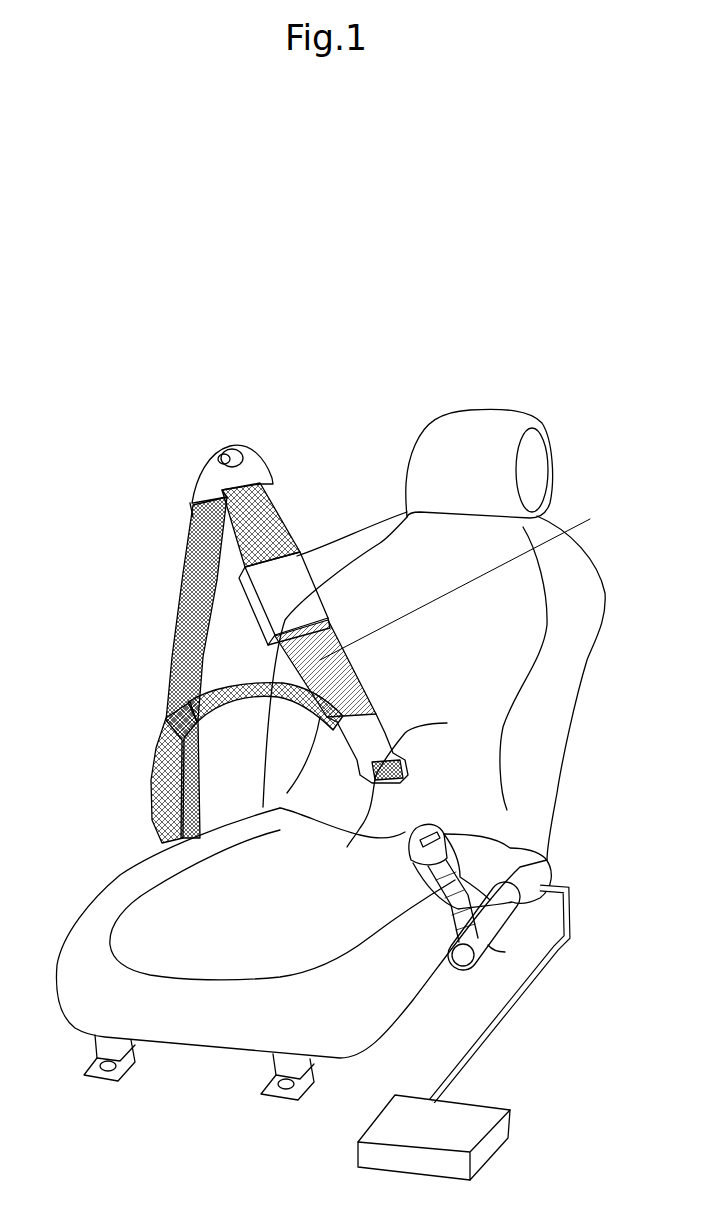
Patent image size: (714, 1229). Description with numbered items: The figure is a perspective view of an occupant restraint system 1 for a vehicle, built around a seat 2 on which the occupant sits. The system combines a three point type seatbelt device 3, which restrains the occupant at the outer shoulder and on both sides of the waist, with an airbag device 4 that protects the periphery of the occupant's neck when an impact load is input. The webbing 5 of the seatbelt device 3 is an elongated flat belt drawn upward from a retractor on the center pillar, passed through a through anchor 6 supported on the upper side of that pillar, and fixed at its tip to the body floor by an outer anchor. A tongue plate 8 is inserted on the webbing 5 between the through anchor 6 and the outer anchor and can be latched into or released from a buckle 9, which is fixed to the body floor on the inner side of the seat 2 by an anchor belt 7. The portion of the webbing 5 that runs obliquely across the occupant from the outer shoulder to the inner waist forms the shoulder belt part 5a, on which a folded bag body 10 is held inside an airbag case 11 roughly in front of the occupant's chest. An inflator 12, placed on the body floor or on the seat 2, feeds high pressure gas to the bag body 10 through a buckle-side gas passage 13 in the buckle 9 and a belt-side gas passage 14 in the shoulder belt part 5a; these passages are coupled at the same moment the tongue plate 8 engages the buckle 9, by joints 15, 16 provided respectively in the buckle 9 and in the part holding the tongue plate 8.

The occupant restraint system 1 is at (307, 513).
The seat 2 is at (523, 627).
The seatbelt device 3 is at (158, 652).
The airbag device 4 is at (180, 592).
The webbing 5 is at (167, 694).
The shoulder belt part 5a is at (469, 583).
The through anchor 6 is at (257, 450).
The anchor belt 7 is at (506, 955).
The tongue plate 8 is at (447, 723).
The buckle 9 is at (462, 852).
The bag body 10 is at (305, 560).
The airbag case 11 is at (191, 517).
The inflator 12 is at (548, 874).
The buckle-side gas passage 13 is at (520, 930).
The belt-side gas passage 14 is at (350, 740).
The joint 15 is at (413, 836).
The joint 16 is at (347, 847).